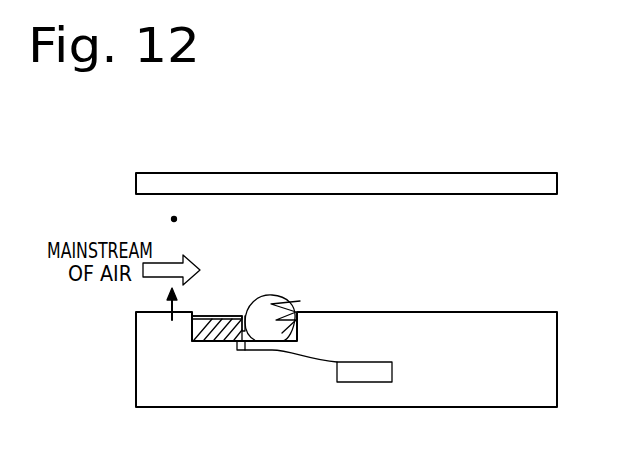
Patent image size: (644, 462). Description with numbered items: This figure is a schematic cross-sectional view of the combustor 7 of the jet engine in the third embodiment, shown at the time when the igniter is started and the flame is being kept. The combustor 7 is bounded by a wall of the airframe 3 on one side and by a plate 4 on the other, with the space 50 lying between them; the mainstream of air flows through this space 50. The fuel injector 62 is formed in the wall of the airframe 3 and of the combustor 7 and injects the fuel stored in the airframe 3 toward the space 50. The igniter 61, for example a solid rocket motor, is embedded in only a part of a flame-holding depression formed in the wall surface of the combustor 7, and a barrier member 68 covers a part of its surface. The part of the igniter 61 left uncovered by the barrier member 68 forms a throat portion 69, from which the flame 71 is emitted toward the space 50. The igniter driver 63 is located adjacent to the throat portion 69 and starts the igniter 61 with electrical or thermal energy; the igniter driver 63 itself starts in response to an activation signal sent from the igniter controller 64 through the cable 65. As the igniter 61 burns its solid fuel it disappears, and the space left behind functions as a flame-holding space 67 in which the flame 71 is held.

The airframe 3 is at (158, 403).
The plate 4 is at (318, 186).
The combustor 7 is at (595, 174).
The space 50 is at (174, 219).
The igniter 61 is at (202, 330).
The fuel injector 62 is at (172, 316).
The igniter driver 63 is at (239, 351).
The igniter controller 64 is at (386, 373).
The cable 65 is at (304, 357).
The flame-holding space 67 is at (277, 304).
The barrier member 68 is at (214, 316).
The throat portion 69 is at (243, 316).
The flame 71 is at (300, 301).